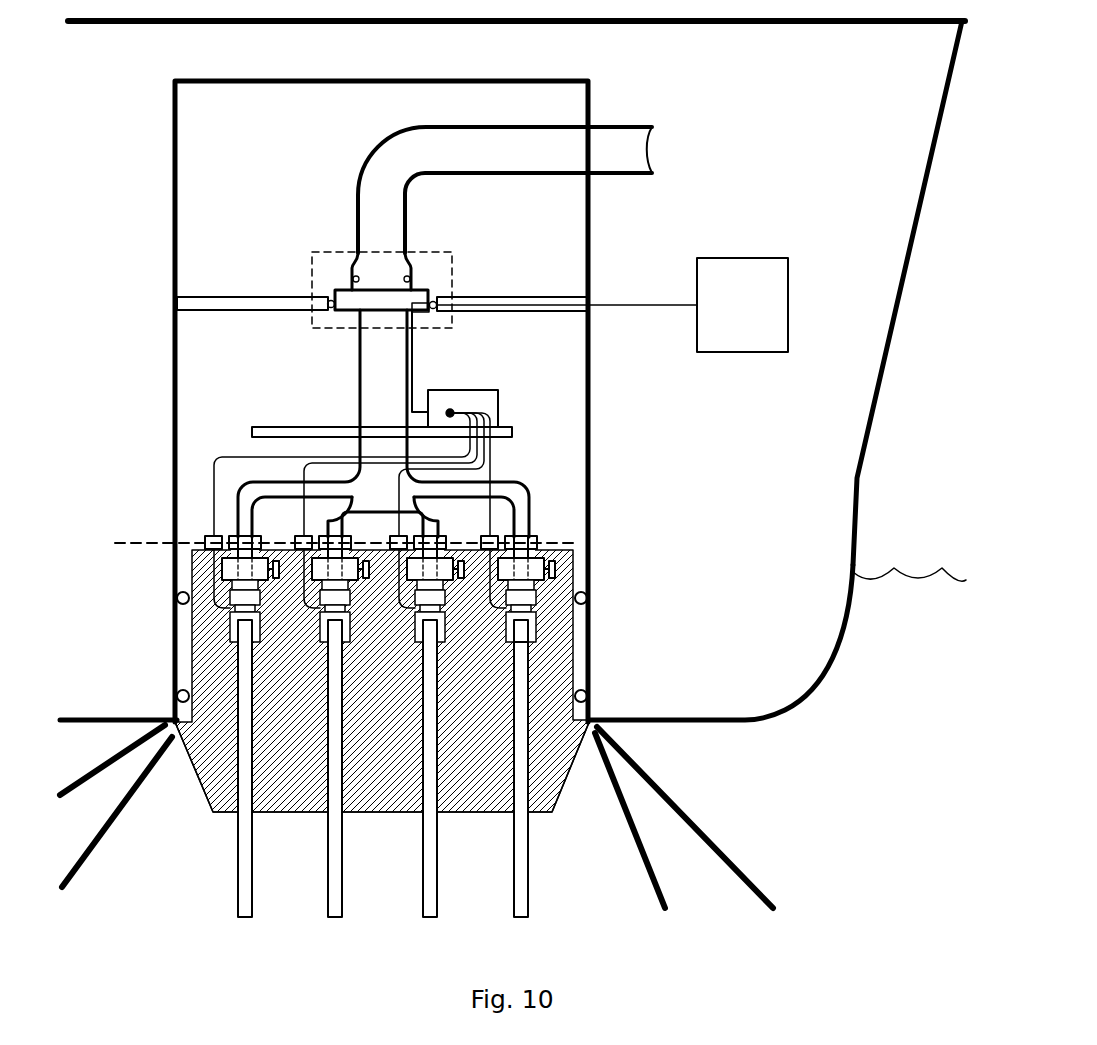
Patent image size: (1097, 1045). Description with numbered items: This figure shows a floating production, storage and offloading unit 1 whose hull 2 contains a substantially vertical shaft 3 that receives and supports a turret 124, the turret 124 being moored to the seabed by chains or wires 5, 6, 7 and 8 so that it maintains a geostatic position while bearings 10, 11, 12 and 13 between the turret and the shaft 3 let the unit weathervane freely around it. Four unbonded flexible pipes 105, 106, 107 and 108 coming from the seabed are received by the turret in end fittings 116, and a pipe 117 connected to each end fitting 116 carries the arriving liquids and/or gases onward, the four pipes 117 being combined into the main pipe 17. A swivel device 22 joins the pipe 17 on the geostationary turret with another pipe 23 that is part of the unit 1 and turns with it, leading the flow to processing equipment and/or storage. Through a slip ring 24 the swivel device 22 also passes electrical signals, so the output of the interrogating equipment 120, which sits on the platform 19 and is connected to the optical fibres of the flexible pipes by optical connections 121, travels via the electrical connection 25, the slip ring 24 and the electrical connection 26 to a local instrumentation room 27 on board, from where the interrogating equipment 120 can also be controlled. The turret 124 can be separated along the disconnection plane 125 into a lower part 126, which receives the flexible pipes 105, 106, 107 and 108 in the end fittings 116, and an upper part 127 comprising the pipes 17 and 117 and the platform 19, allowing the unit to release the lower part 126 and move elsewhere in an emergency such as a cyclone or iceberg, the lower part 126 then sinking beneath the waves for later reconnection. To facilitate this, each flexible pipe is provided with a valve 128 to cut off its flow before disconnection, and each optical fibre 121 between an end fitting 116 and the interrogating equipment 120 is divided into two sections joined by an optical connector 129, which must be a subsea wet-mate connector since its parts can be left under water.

The floating production, storage and offloading unit 1 is at (858, 665).
The hull 2 is at (883, 378).
The shaft 3 is at (175, 212).
The chain or wire 5 is at (108, 767).
The chain or wire 6 is at (100, 842).
The chain or wire 7 is at (647, 878).
The chain or wire 8 is at (670, 797).
The bearing 10 is at (177, 598).
The bearing 11 is at (173, 695).
The bearing 12 is at (593, 597).
The bearing 13 is at (593, 695).
The main pipe 17 is at (355, 402).
The platform 19 is at (253, 428).
The swivel device 22 is at (438, 247).
The pipe 23 is at (365, 163).
The slip ring 24 is at (332, 313).
The electrical connection 25 is at (412, 358).
The electrical connection 26 is at (628, 302).
The local instrumentation room 27 is at (758, 258).
The unbonded flexible pipe 105 is at (253, 882).
The unbonded flexible pipe 106 is at (345, 882).
The unbonded flexible pipe 107 is at (437, 882).
The unbonded flexible pipe 108 is at (530, 882).
The end-fitting 116 is at (543, 610).
The pipe 117 is at (528, 512).
The interrogating equipment 120 is at (498, 405).
The optical connection 121 is at (490, 472).
The turret 124 is at (565, 827).
The disconnection plane 125 is at (125, 541).
The lower part 126 is at (193, 783).
The upper part 127 is at (277, 397).
The valve 128 is at (552, 543).
The optical connector 129 is at (205, 536).